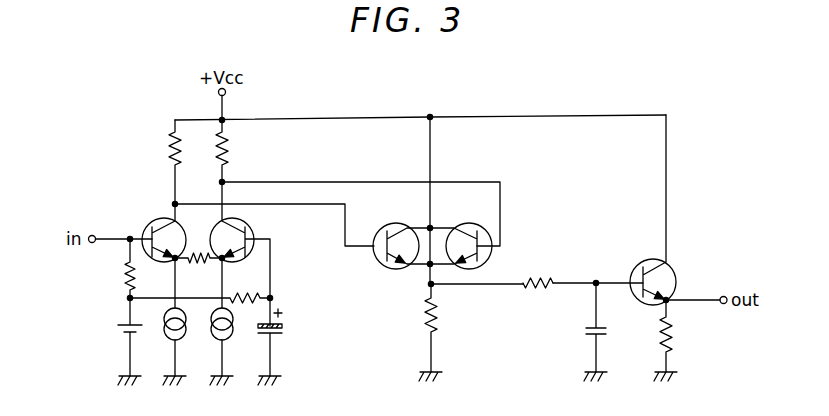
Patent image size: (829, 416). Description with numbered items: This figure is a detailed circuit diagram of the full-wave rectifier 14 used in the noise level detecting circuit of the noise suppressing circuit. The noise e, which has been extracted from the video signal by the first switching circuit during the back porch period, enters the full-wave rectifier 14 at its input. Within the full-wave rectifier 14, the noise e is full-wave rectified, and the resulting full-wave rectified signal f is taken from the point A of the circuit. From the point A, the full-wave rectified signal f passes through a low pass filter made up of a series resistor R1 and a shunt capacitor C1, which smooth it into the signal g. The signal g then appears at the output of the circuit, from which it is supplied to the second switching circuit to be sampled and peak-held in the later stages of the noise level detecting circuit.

The full-wave rectifier 14 is at (609, 86).
The noise e is at (112, 238).
The point A is at (428, 284).
The full-wave rectified signal f is at (487, 285).
The signal g is at (691, 299).
The resistor R1 is at (538, 273).
The capacitor C1 is at (584, 327).